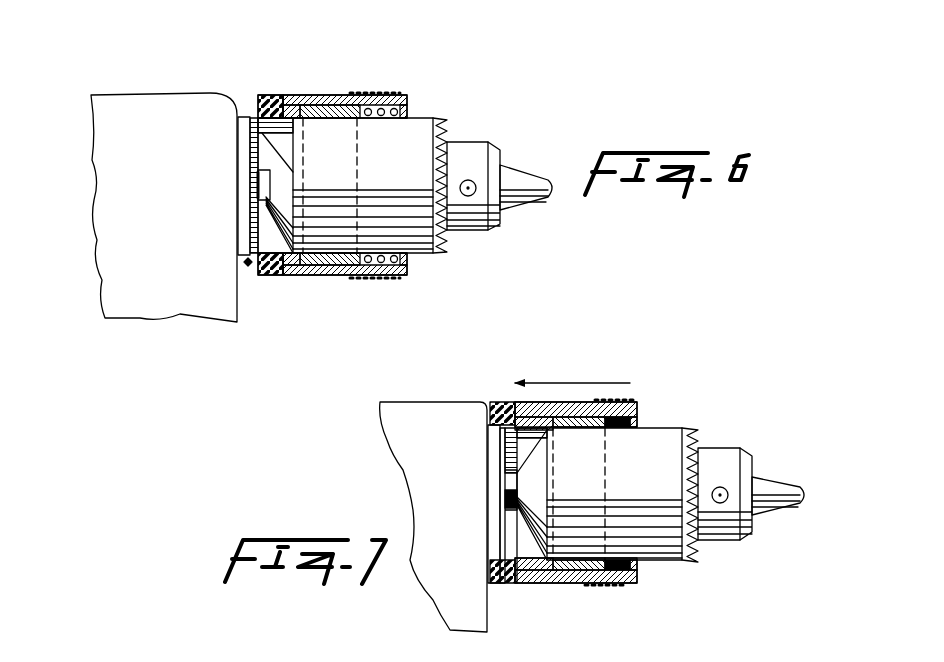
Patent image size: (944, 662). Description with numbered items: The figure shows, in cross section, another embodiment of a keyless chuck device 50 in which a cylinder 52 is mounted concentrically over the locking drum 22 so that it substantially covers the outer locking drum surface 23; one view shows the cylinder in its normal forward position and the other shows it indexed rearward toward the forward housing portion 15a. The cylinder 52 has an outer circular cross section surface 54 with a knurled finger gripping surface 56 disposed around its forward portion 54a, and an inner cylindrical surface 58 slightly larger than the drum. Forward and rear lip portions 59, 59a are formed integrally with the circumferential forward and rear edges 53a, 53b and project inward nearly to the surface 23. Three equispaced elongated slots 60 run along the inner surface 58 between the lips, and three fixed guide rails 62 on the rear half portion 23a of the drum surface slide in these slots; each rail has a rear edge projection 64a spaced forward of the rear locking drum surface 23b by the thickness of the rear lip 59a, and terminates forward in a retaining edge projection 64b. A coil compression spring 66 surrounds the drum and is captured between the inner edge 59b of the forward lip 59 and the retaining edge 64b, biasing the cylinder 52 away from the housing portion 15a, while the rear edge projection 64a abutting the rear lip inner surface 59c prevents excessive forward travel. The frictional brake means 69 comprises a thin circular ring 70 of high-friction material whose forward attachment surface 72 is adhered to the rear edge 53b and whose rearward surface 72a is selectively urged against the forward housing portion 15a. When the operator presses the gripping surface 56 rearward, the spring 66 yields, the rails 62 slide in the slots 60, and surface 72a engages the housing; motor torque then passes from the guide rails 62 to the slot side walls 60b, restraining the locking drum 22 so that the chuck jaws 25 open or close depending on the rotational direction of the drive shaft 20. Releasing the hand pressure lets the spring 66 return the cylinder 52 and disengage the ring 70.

In FIG. 6, the forward housing portion 15a is at (240, 262).
In FIG. 7, the forward housing portion 15a is at (488, 560).
In FIG. 7, the drive shaft 20 is at (517, 497).
In FIG. 6, the locking drum 22 is at (445, 261).
In FIG. 7, the locking drum 22 is at (658, 440).
In FIG. 6, the outer locking drum surface 23 is at (417, 133).
In FIG. 6, the rear half portion of outer locking drum surface 23a is at (322, 135).
In FIG. 6, the rear locking drum surface 23b is at (260, 124).
In FIG. 6, the chuck jaws 25 is at (535, 165).
In FIG. 7, the chuck jaws 25 is at (773, 480).
In FIG. 6, the keyless chuck device 50 is at (408, 115).
In FIG. 6, the cylinder 52 is at (285, 287).
In FIG. 6, the circumferential forward edge 53a is at (412, 118).
In FIG. 7, the circumferential forward edge 53a is at (548, 430).
In FIG. 6, the circumferential rear edge 53b is at (283, 96).
In FIG. 7, the circumferential rear edge 53b is at (500, 585).
In FIG. 6, the outer circular cross section surface 54 is at (313, 278).
In FIG. 6, the forward portion of the cylinder 54a is at (413, 90).
In FIG. 6, the finger gripping surface 56 is at (362, 93).
In FIG. 7, the finger gripping surface 56 is at (615, 588).
In FIG. 6, the inner cylindrical surface 58 is at (323, 257).
In FIG. 6, the forward lip portion 59 is at (408, 266).
In FIG. 6, the rear lip portion 59a is at (300, 275).
In FIG. 6, the inner edge of forward lip 59b is at (386, 118).
In FIG. 6, the rear lip inner surface 59c is at (312, 253).
In FIG. 6, the elongated slots 60 is at (345, 93).
In FIG. 7, the elongated slots 60 is at (632, 402).
In FIG. 7, the side walls of slots 60b is at (637, 567).
In FIG. 6, the guide rails 62 is at (318, 106).
In FIG. 7, the guide rails 62 is at (578, 570).
In FIG. 6, the rear edge projection 64a is at (292, 97).
In FIG. 6, the retaining edge projection 64b is at (362, 277).
In FIG. 6, the coil compression spring 66 is at (383, 280).
In FIG. 7, the coil compression spring 66 is at (637, 420).
In FIG. 6, the frictional brake means 69 is at (247, 88).
In FIG. 6, the circular ring 70 is at (265, 92).
In FIG. 7, the circular ring 70 is at (500, 400).
In FIG. 6, the forward attachment surface 72 is at (257, 262).
In FIG. 6, the rearward surface 72a is at (260, 263).
In FIG. 7, the rearward surface 72a is at (490, 578).